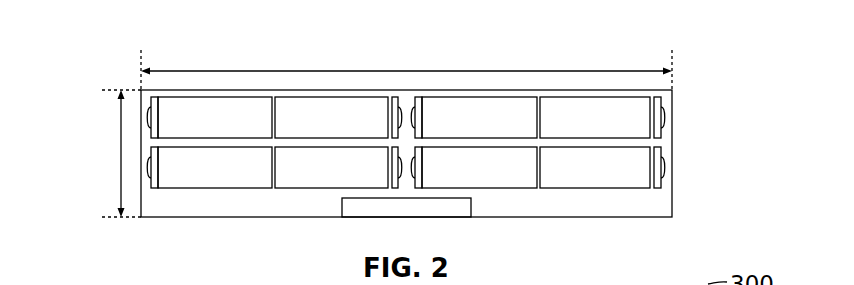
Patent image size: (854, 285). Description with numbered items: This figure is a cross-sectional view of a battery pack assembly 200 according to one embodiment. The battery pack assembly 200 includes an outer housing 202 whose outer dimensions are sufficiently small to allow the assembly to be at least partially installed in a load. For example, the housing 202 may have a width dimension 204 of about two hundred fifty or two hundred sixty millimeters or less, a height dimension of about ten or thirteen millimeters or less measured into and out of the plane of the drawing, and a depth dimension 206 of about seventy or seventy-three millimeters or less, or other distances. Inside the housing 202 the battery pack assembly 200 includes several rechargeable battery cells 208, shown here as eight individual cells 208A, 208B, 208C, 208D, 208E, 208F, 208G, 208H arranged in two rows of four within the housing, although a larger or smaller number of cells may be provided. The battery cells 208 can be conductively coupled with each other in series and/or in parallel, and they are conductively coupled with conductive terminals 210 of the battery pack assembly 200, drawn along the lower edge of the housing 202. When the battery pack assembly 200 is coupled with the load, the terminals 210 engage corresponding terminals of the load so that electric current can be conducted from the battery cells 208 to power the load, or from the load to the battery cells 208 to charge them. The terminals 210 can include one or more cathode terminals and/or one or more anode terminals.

The battery pack assembly 200 is at (685, 43).
The outer housing 202 is at (673, 153).
The width dimension 204 is at (235, 71).
The depth dimension 206 is at (121, 153).
The rechargeable battery cells 208 is at (406, 107).
The battery cell 208A is at (243, 129).
The battery cell 208B is at (362, 129).
The battery cell 208C is at (508, 129).
The battery cell 208D is at (630, 129).
The battery cell 208E is at (242, 180).
The battery cell 208F is at (361, 180).
The battery cell 208G is at (509, 180).
The battery cell 208H is at (602, 167).
The conductive terminals 210 is at (433, 225).